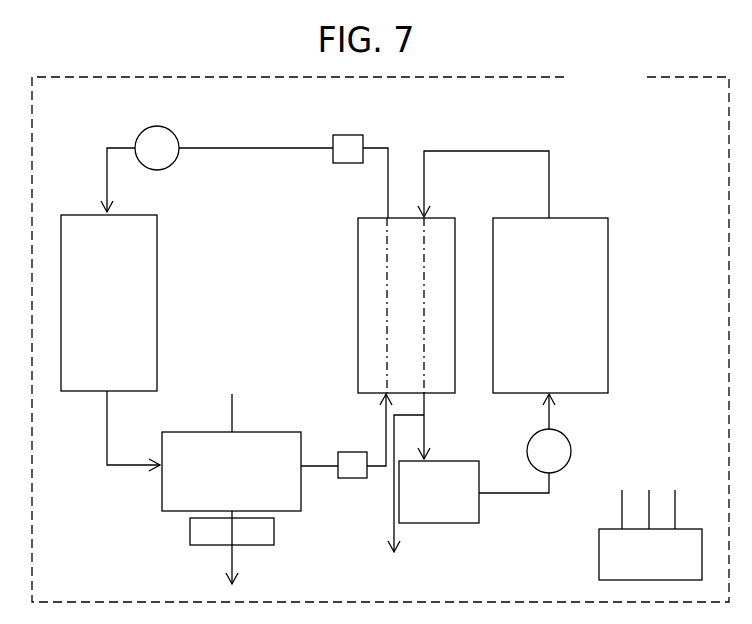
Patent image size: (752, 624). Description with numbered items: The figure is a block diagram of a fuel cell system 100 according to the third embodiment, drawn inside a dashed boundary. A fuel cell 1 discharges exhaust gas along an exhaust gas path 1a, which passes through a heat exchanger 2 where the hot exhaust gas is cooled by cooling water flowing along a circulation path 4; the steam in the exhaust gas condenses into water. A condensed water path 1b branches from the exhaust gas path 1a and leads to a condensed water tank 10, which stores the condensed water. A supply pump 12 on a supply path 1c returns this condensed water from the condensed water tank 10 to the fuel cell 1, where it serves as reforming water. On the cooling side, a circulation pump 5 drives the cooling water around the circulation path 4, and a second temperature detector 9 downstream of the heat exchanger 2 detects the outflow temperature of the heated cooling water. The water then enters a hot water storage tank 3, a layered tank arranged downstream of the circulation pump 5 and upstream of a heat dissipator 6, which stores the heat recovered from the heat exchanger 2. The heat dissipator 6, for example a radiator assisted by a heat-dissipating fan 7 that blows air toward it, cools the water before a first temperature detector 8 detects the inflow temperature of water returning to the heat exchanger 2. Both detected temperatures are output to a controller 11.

The fuel cell system 100 is at (380, 332).
The fuel cell 1 is at (542, 314).
The exhaust gas path 1a is at (481, 150).
The condensed water path 1b is at (424, 430).
The supply path 1c is at (514, 493).
The heat exchanger 2 is at (399, 314).
The hot water storage tank 3 is at (101, 314).
The circulation path 4 is at (256, 148).
The circulation pump 5 is at (150, 159).
The heat dissipator 6 is at (225, 482).
The heat-dissipating fan 7 is at (274, 532).
The first temperature detector 8 is at (351, 478).
The second temperature detector 9 is at (348, 135).
The condensed water tank 10 is at (428, 503).
The controller 11 is at (638, 567).
The supply pump 12 is at (538, 462).